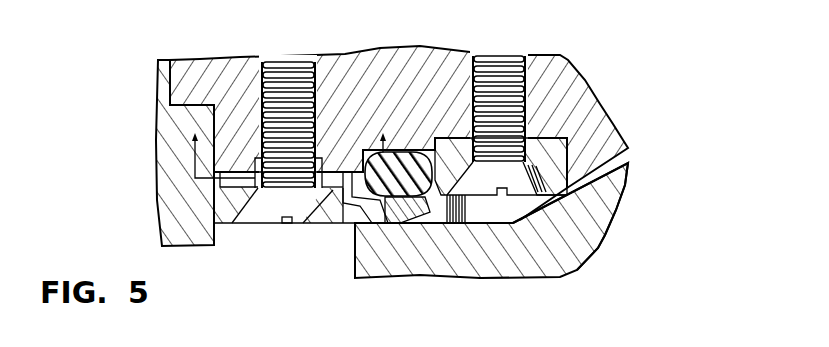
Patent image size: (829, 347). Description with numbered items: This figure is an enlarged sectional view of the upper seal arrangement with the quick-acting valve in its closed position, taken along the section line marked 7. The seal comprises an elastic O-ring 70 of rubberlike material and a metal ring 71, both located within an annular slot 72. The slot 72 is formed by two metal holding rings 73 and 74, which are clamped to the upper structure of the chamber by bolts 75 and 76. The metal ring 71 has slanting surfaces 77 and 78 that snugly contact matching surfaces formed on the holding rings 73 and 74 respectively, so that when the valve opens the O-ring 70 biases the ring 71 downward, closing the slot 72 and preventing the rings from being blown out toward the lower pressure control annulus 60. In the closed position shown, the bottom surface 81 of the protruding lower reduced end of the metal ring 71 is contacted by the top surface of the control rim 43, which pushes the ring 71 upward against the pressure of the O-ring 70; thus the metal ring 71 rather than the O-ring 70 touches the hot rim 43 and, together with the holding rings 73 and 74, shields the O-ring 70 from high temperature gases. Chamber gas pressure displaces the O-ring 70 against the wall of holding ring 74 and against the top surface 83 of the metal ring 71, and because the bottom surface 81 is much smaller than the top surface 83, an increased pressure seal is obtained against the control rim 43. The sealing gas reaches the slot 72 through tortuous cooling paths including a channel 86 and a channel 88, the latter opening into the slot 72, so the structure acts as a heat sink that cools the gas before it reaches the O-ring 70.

The section line 7- 7 is at (288, 146).
The control rim 43 is at (532, 277).
The control annulus 60 is at (572, 195).
The O-ring 70 is at (418, 160).
The metal ring 71 is at (440, 230).
The annular slot 72 is at (340, 150).
The metal holding ring 73 is at (368, 222).
The metal holding ring 74 is at (542, 156).
The bolt 75 is at (292, 66).
The bolt 76 is at (498, 67).
The slanting surface 77 is at (400, 197).
The slanting surface 78 is at (432, 204).
The bottom surface 81 is at (408, 240).
The top surface 83 is at (456, 190).
The channel 86 is at (248, 168).
The channel 88 is at (312, 218).